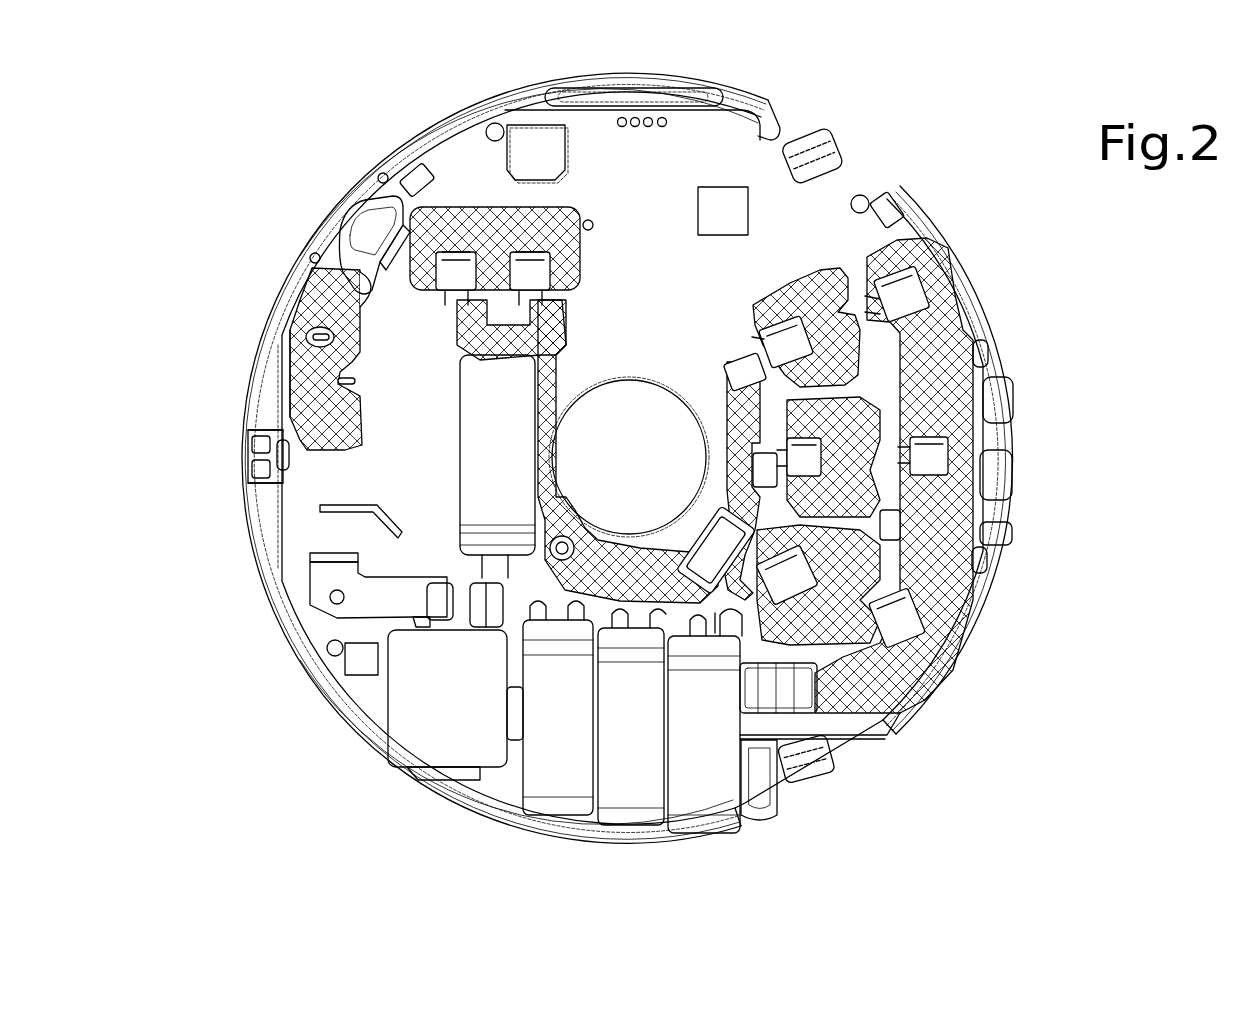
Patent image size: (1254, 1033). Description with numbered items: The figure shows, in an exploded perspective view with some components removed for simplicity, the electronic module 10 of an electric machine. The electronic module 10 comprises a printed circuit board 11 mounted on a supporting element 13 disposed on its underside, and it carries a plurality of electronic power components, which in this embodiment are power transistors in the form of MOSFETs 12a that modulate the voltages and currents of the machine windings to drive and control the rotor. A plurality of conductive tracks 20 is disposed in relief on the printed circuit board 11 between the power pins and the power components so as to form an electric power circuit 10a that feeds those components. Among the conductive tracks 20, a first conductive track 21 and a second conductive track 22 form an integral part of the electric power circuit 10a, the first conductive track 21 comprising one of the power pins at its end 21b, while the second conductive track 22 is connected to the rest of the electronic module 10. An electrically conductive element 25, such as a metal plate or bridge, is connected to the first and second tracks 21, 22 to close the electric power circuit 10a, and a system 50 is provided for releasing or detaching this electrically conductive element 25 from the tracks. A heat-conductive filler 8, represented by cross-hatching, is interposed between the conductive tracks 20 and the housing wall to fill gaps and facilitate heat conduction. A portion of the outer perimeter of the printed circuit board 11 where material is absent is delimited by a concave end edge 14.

The heat-conductive filler 8 is at (555, 360).
The electronic module 10 is at (852, 118).
The electric power circuit 10a is at (530, 498).
The printed circuit board 11 is at (815, 208).
The MOSFETs 12a is at (783, 340).
The supporting element 13 is at (690, 90).
The concave end edge 14 is at (330, 320).
The conductive tracks 20 is at (898, 688).
The first conductive track 21 is at (330, 300).
The end of the first track 21b is at (330, 450).
The second conductive track 22 is at (430, 225).
The electrically conductive element 25 is at (375, 232).
The release system 50 is at (497, 215).